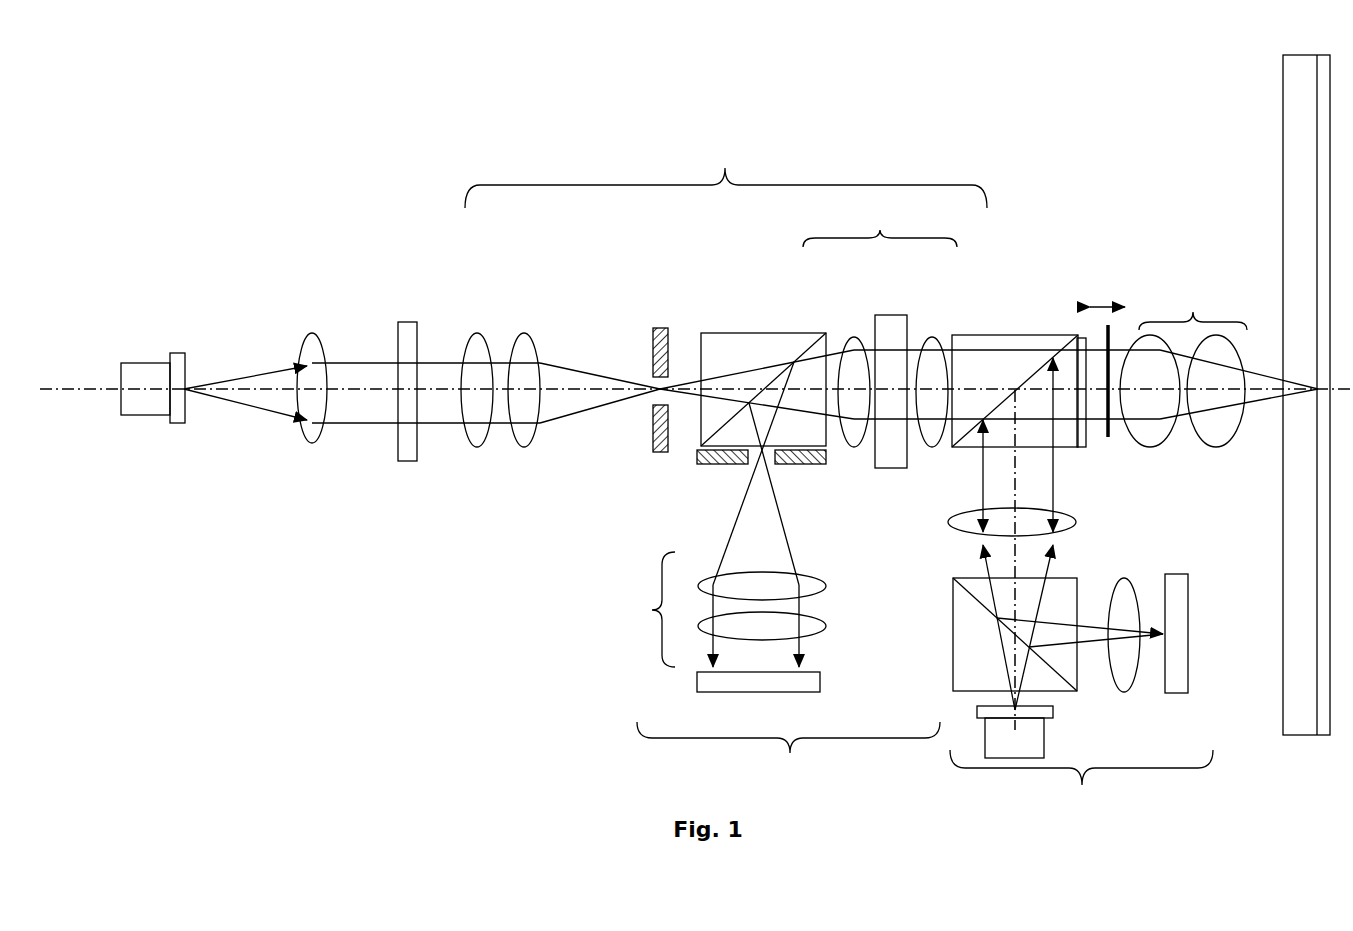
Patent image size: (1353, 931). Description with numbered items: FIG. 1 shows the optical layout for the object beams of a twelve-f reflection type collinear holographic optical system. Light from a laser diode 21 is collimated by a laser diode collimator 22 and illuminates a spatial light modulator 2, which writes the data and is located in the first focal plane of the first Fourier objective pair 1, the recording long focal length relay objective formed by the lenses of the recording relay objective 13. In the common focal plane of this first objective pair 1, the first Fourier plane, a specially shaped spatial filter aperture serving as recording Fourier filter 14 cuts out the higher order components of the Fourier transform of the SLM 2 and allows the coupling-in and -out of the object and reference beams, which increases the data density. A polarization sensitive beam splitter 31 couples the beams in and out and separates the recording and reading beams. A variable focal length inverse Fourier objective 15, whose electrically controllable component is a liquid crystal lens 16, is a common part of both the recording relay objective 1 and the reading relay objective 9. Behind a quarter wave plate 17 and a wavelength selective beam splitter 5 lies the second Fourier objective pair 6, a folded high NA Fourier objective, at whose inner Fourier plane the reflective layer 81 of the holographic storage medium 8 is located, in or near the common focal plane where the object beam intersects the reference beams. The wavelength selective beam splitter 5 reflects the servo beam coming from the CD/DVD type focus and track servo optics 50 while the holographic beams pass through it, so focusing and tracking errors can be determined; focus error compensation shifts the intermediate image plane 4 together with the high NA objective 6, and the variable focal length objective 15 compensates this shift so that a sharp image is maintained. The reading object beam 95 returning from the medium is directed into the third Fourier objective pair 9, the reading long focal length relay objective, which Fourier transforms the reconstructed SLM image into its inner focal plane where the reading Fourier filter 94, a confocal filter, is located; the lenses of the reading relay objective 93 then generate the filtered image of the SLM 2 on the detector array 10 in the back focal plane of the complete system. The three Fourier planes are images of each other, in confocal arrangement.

The first Fourier objective pair 1 is at (726, 178).
The spatial light modulator 2 is at (401, 452).
The intermediate image plane 4 is at (1110, 300).
The wavelength selective beam splitter 5 is at (1004, 396).
The second Fourier objective pair 6 is at (1183, 365).
The holographic storage medium 8 is at (1297, 167).
The reflective layer 81 is at (1317, 702).
The third Fourier objective pair 9 is at (788, 756).
The detector array 10 is at (762, 683).
The lenses of the recording relay objective 13 is at (510, 339).
The recording Fourier filter 14 is at (645, 352).
The variable focal length inverse Fourier objective 15 is at (880, 330).
The liquid crystal lens 16 is at (888, 313).
The quarter wave plate 17 is at (1078, 335).
The laser diode 21 is at (148, 412).
The laser diode collimator 22 is at (312, 346).
The polarization sensitive beam splitter 31 is at (744, 352).
The CD/DVD type focus and track servo optics 50 is at (1080, 607).
The lenses of the reading relay objective 93 is at (713, 609).
The reading Fourier filter 94 is at (732, 462).
The reading object beam 95 is at (760, 522).